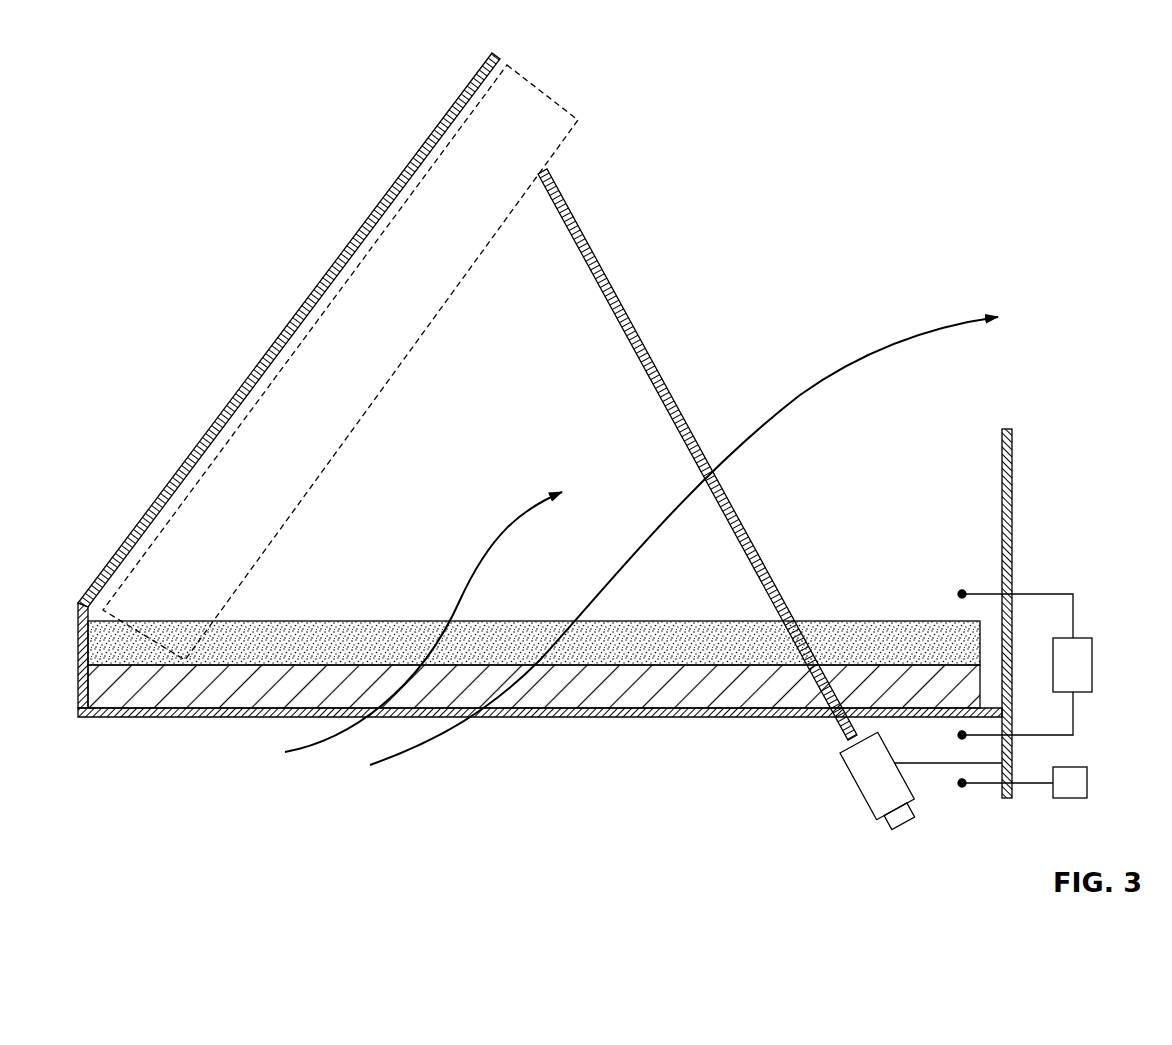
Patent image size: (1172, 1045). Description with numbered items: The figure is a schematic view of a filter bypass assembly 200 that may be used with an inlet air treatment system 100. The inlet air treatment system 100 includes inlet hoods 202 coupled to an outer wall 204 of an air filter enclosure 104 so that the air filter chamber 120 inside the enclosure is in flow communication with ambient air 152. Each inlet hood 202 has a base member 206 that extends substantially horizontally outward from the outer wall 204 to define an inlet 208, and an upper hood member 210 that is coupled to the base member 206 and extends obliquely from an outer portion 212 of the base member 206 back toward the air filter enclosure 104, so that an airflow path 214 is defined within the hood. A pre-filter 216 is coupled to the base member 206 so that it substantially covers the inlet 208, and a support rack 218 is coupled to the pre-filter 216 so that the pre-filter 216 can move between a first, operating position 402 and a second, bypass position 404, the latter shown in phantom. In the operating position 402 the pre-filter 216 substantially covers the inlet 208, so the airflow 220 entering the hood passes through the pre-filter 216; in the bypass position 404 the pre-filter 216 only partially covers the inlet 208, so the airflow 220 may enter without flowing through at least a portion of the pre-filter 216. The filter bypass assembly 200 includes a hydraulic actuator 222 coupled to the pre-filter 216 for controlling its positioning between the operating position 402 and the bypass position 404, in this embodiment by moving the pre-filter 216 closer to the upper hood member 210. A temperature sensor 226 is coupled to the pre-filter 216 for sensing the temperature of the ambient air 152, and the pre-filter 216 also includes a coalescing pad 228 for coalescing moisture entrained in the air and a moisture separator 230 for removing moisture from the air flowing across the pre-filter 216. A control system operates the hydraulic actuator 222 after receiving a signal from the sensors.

The inlet air treatment system 100 is at (842, 110).
The air filter enclosure 104 is at (1013, 463).
The air filter chamber 120 is at (1170, 335).
The ambient air 152 is at (240, 800).
The filter bypass assembly 200 is at (733, 832).
The inlet hood 202 is at (348, 106).
The outer wall 204 is at (1013, 528).
The base member 206 is at (768, 718).
The inlet 208 is at (577, 718).
The upper hood member 210 is at (329, 270).
The outer portion 212 is at (142, 718).
The airflow path 214 is at (902, 340).
The pre-filter 216 is at (428, 590).
The support rack 218 is at (927, 600).
The airflow 220 is at (520, 510).
The hydraulic actuator 222 is at (855, 790).
The temperature sensor 226 is at (1071, 767).
The coalescing pad 228 is at (308, 621).
The moisture separator 230 is at (165, 697).
The operating position 402 is at (648, 597).
The bypass position 404 is at (584, 90).